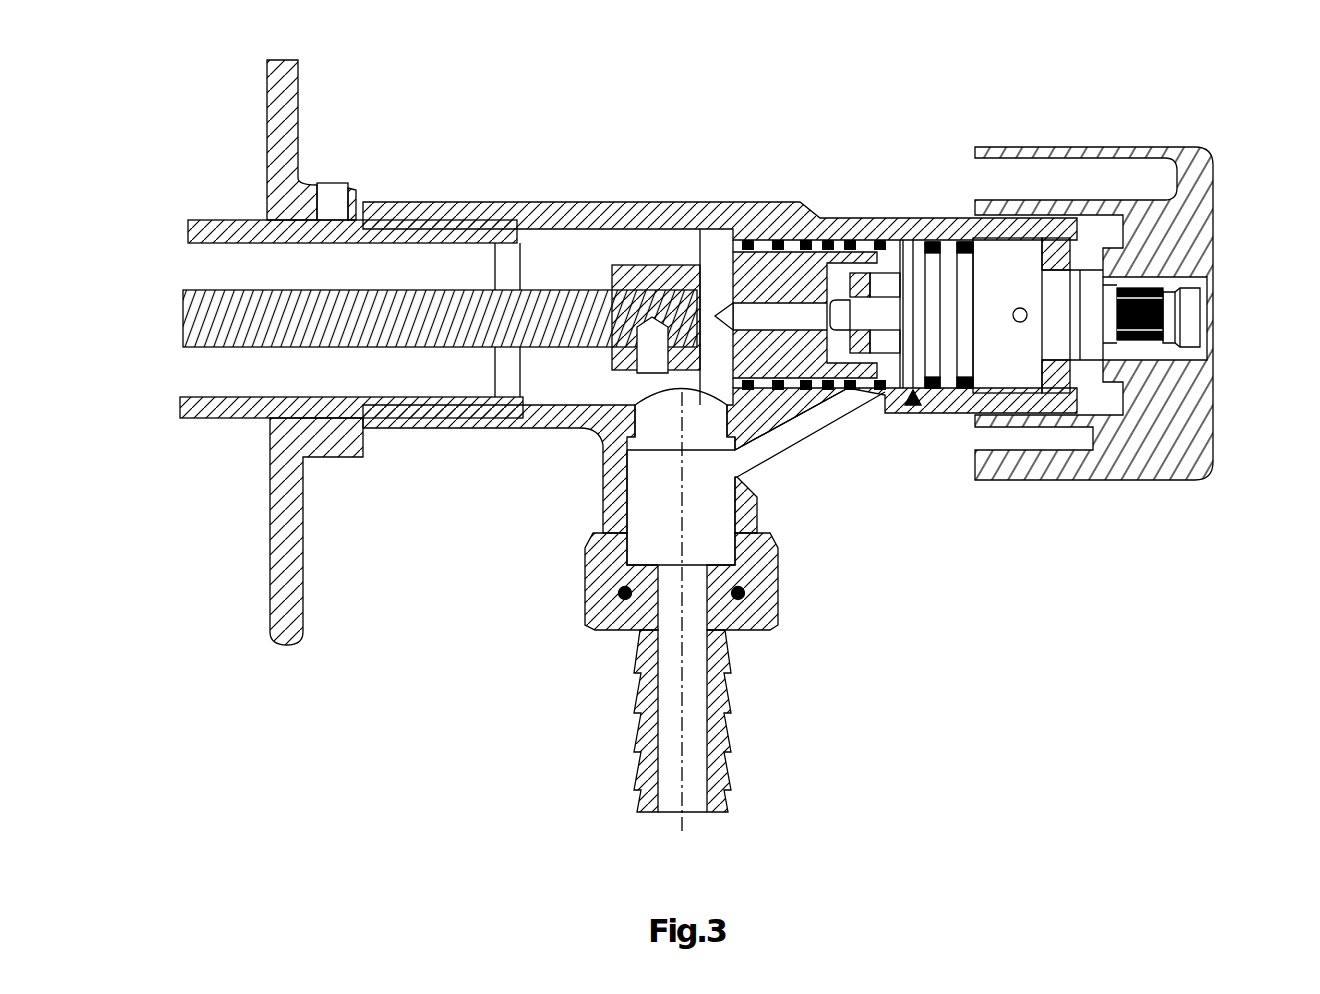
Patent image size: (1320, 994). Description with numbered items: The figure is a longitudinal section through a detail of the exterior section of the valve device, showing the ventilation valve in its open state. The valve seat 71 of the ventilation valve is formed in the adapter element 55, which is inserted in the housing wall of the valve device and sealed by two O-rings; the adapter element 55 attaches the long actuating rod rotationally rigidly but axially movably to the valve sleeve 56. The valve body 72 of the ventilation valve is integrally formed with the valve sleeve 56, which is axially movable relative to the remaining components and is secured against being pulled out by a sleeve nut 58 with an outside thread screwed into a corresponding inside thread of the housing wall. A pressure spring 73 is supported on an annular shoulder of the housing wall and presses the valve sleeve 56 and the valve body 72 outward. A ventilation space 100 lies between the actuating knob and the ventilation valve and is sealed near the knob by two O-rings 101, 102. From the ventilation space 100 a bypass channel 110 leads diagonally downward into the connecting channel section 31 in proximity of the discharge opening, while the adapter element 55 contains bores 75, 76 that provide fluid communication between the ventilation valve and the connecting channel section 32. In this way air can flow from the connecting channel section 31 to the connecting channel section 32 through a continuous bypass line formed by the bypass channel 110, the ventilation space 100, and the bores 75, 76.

The connecting channel section 32 is at (558, 255).
The connecting channel section 31 is at (652, 503).
The bypass channel 110 is at (795, 432).
The pressure spring 73 is at (877, 387).
The bore 75 is at (690, 278).
The bore 76 is at (728, 305).
The adapter element 55 is at (757, 245).
The valve seat 71 is at (840, 265).
The valve body 72 is at (887, 265).
The O-ring 101 is at (938, 240).
The O-ring 102 is at (962, 245).
The ventilation space 100 is at (913, 402).
The valve sleeve 56 is at (1017, 260).
The sleeve nut 58 is at (1073, 245).